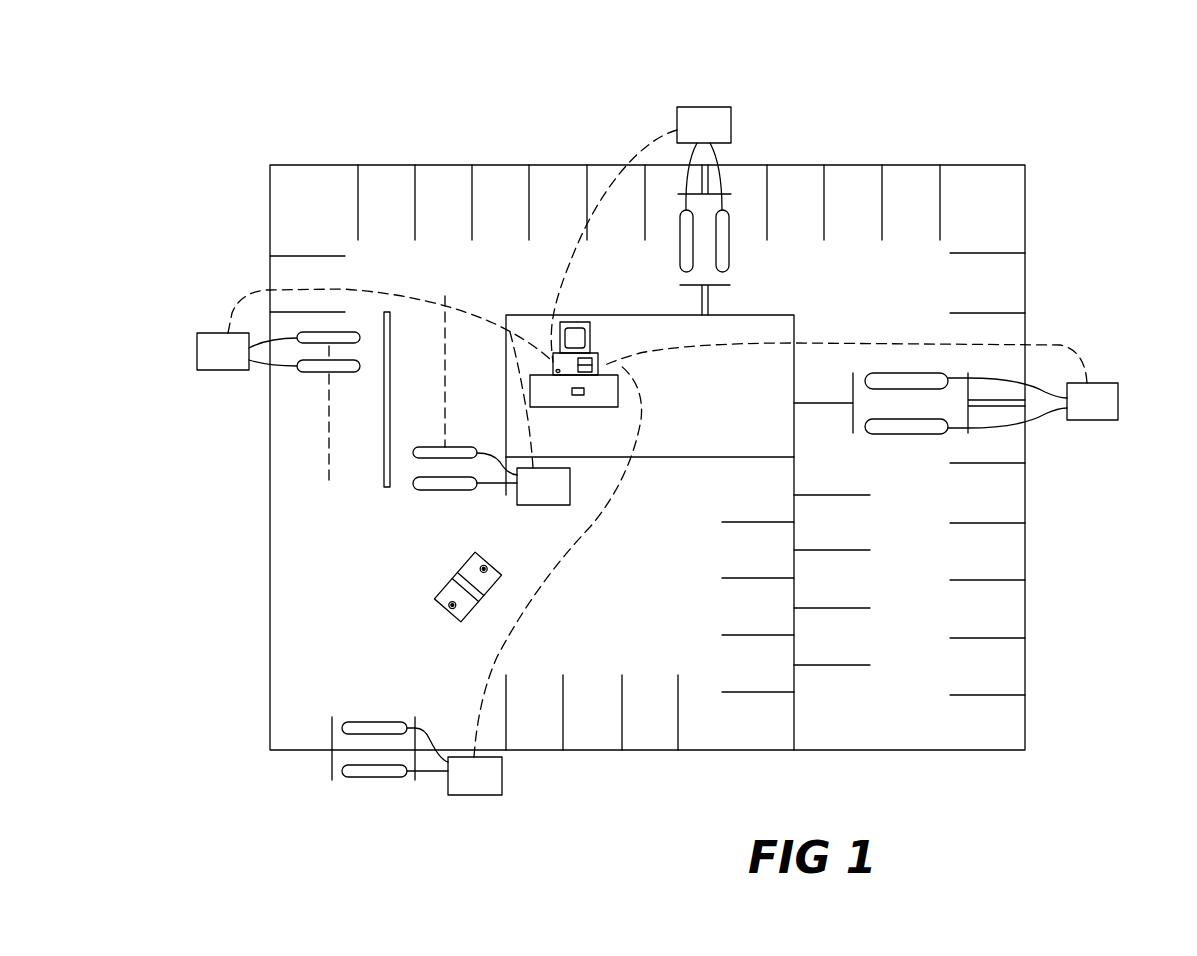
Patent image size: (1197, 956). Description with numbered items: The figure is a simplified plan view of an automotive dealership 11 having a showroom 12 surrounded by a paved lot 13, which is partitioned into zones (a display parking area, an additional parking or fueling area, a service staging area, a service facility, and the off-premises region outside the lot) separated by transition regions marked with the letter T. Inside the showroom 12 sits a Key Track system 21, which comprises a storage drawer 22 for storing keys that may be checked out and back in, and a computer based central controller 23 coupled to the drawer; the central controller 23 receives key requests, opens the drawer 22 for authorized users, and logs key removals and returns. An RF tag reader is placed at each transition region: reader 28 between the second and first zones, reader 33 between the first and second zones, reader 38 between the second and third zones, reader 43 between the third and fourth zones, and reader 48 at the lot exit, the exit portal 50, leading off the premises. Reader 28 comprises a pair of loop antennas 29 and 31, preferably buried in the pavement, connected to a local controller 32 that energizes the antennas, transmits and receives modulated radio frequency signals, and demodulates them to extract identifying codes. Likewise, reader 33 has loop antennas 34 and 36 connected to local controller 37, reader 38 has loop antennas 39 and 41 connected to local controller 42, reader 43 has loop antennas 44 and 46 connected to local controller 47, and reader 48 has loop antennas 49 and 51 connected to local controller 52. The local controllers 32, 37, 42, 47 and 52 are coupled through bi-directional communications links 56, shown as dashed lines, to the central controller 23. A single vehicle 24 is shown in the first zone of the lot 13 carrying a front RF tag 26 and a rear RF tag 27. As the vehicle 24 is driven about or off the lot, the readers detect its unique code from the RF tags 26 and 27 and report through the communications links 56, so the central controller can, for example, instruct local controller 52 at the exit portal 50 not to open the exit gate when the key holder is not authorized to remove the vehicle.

The automotive dealership 11 is at (1056, 99).
The showroom 12 is at (770, 314).
The paved lot 13 is at (290, 577).
The Key Track system 21 is at (666, 371).
The storage drawer 22 is at (567, 407).
The central controller 23 is at (600, 350).
The vehicle 24 is at (443, 571).
The RF tag 26 is at (490, 562).
The RF tag 27 is at (453, 613).
The RF tag reader 28 is at (251, 391).
The loop antenna 29 is at (343, 373).
The loop antenna 31 is at (358, 332).
The local controller 32 is at (197, 348).
The RF tag reader 33 is at (505, 520).
The loop antenna 34 is at (431, 490).
The loop antenna 36 is at (428, 447).
The local controller 37 is at (523, 505).
The RF tag reader 38 is at (766, 128).
The loop antenna 39 is at (679, 236).
The loop antenna 41 is at (729, 238).
The local controller 42 is at (710, 107).
The RF tag reader 43 is at (1074, 441).
The loop antenna 44 is at (906, 373).
The loop antenna 46 is at (906, 436).
The local controller 47 is at (1120, 397).
The RF tag reader 48 is at (443, 816).
The loop antenna 49 is at (374, 721).
The exit portal 50 is at (328, 793).
The loop antenna 51 is at (360, 778).
The local controller 52 is at (504, 775).
The communications links 56 is at (638, 133).